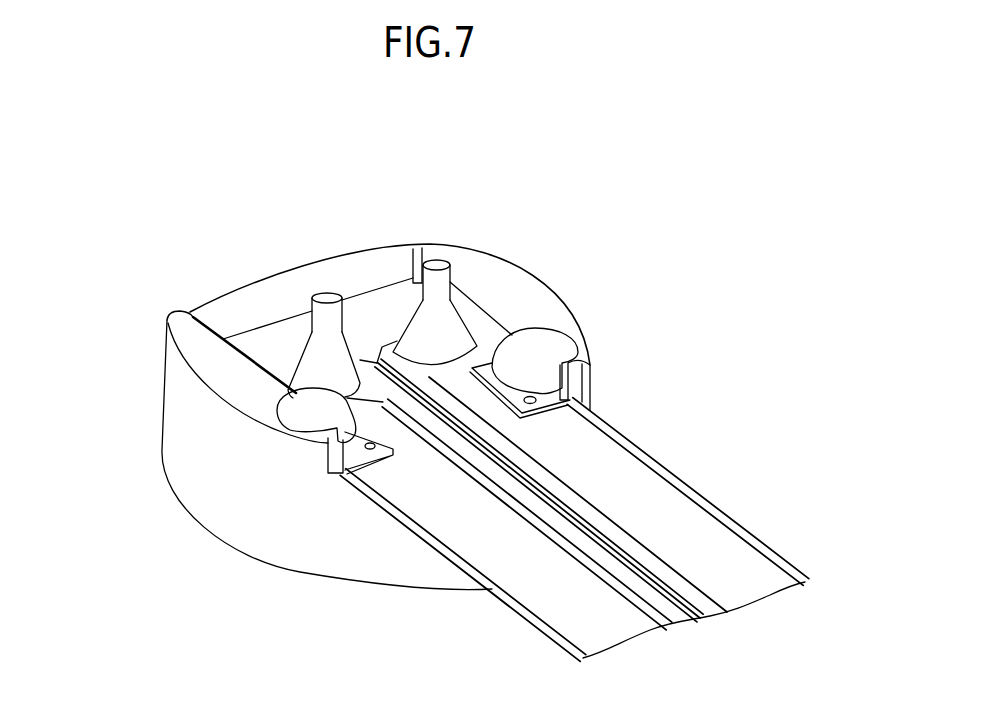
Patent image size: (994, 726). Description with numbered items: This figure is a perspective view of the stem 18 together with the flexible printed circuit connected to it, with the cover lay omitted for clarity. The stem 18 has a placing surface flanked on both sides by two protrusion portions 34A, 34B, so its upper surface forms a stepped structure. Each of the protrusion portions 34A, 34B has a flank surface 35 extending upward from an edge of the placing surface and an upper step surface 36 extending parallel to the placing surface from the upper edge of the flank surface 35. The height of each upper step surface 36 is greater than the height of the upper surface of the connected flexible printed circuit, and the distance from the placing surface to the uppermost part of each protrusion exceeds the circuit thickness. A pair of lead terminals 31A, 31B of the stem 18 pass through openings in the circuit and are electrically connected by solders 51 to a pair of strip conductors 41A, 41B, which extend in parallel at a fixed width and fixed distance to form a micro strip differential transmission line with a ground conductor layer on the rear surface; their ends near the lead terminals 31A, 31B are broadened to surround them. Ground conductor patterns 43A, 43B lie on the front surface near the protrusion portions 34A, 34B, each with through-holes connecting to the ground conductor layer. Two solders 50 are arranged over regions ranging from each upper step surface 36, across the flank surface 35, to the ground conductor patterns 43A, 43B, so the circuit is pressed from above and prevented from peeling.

The stem 18 is at (173, 437).
The lead terminal 31A is at (326, 296).
The lead terminal 31B is at (437, 264).
The protrusion portion 34A is at (157, 313).
The protrusion portion 34B is at (605, 357).
The flank surface 35 is at (210, 325).
The upper step surface 36 is at (182, 327).
The strip conductor 41A is at (533, 512).
The strip conductor 41B is at (583, 512).
The ground conductor pattern 43A is at (390, 452).
The ground conductor pattern 43B is at (513, 398).
The solder 50 is at (307, 405).
The solder 51 is at (310, 353).